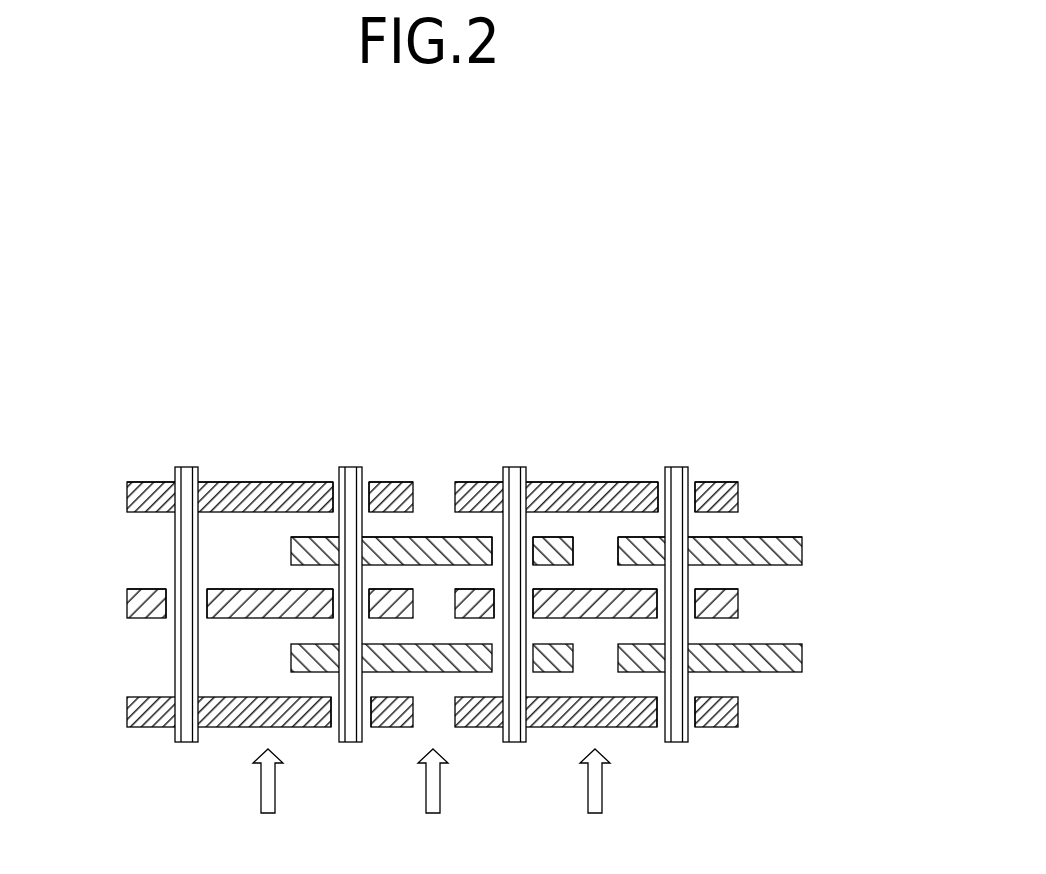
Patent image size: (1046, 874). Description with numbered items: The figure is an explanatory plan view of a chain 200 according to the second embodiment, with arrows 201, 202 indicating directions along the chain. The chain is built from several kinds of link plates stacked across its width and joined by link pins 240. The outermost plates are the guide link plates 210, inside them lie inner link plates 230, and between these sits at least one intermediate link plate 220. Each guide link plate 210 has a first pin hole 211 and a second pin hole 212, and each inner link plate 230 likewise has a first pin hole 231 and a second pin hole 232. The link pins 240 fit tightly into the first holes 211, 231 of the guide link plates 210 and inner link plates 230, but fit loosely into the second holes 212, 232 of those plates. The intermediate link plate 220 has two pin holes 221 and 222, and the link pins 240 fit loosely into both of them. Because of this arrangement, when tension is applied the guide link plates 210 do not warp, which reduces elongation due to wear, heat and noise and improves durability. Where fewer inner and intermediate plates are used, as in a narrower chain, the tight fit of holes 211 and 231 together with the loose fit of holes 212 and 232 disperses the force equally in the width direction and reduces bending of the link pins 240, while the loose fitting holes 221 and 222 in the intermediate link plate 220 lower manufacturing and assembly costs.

The electrode stack assembly 200 is at (678, 353).
The first gas flow 201 is at (431, 800).
The second gas flow 202 is at (432, 800).
The guide link plate 210 is at (230, 482).
The first pin hole of guide link plate 211 is at (161, 482).
The second pin hole of guide link plate 212 is at (338, 482).
The intermediate link plate 220 is at (128, 602).
The pin hole of intermediate link plate 221 is at (173, 590).
The pin hole of intermediate link plate 222 is at (329, 609).
The inner link plate 230 is at (432, 548).
The first pin hole of inner link plate 231 is at (362, 540).
The second pin hole of inner link plate 232 is at (492, 542).
The link pin 240 is at (182, 737).